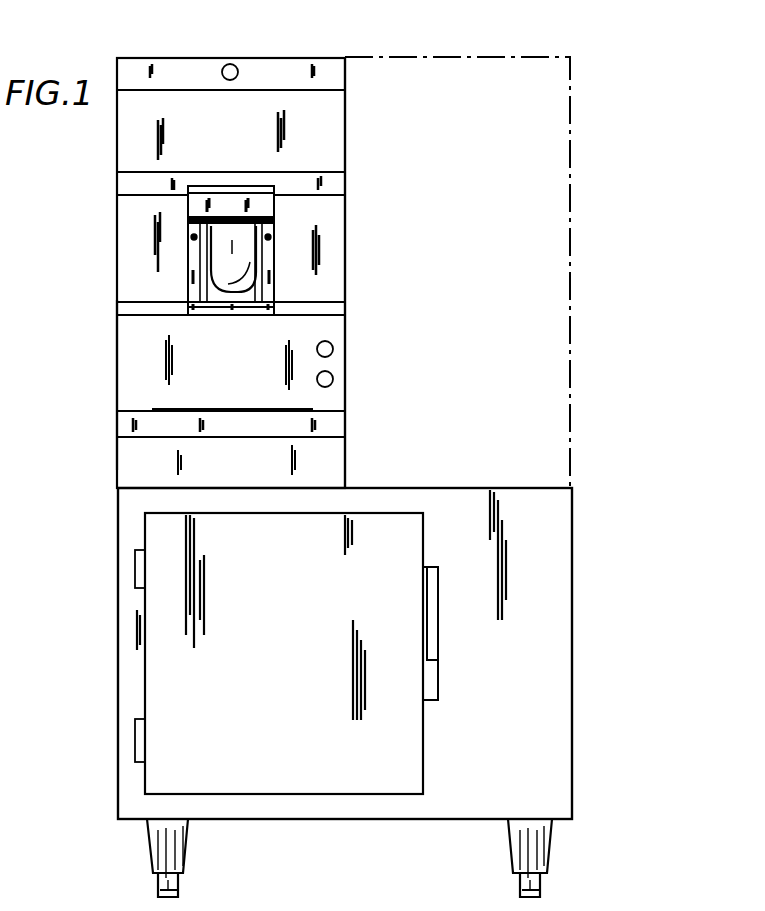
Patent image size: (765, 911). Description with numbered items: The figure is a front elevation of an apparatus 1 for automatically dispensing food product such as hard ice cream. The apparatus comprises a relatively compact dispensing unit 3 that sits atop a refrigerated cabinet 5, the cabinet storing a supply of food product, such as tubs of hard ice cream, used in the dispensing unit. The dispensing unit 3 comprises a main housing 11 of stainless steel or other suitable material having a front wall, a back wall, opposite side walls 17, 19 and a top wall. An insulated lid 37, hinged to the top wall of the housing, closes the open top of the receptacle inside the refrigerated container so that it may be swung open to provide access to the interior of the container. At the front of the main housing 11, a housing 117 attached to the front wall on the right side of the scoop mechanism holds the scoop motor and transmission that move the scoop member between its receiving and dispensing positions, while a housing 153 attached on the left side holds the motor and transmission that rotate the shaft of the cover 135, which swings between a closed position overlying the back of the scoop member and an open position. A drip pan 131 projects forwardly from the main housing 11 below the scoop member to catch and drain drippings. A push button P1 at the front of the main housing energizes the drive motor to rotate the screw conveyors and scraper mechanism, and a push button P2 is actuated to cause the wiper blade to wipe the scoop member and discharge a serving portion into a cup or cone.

The dispensing apparatus 1 is at (605, 111).
The dispensing unit 3 is at (309, 57).
The refrigerated cabinet 5 is at (578, 637).
The main housing 11 is at (117, 383).
The side wall 17 is at (135, 127).
The side wall 19 is at (345, 147).
The insulated lid 37 is at (195, 66).
The housing 117 is at (315, 243).
The drip pan 131 is at (330, 423).
The cover 135 is at (252, 262).
The housing 153 is at (130, 237).
The push button P1 is at (333, 347).
The push button P2 is at (333, 377).